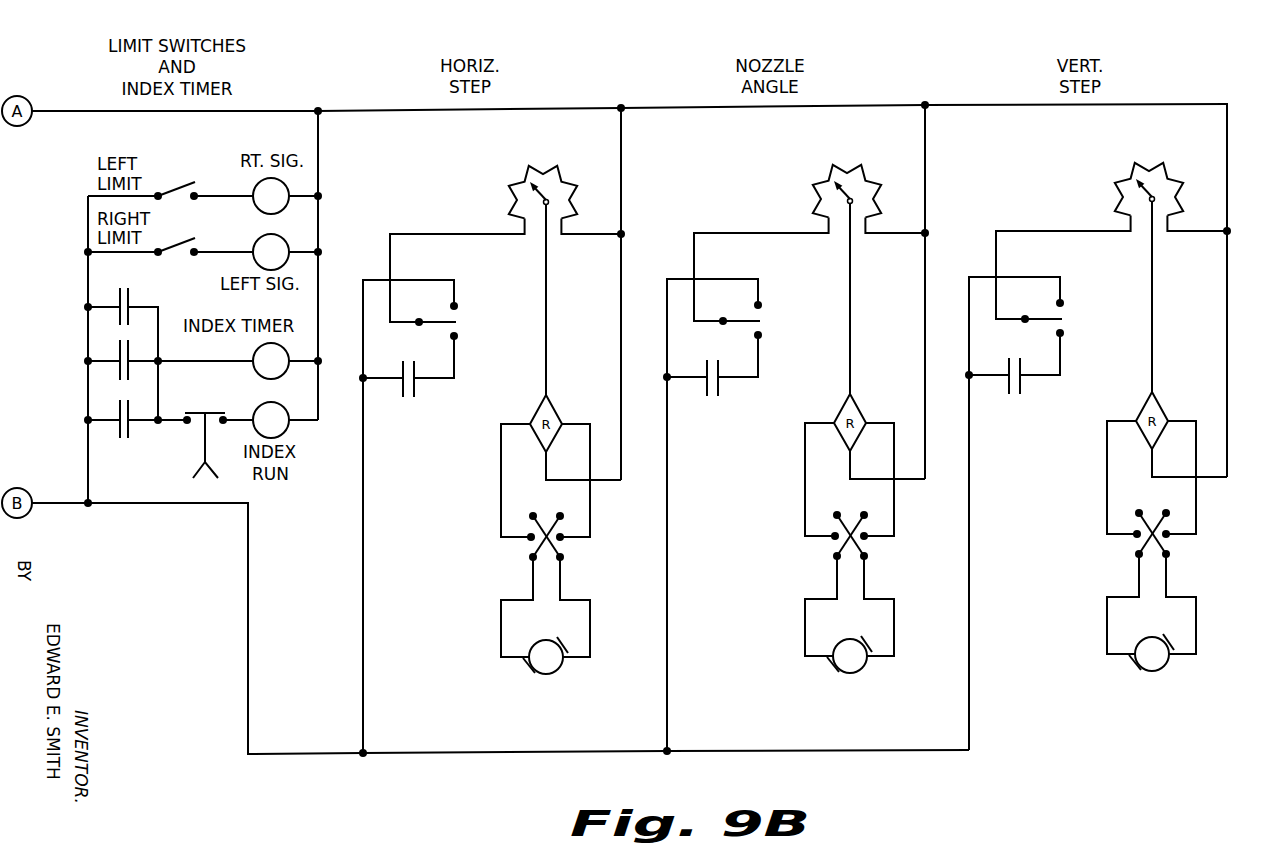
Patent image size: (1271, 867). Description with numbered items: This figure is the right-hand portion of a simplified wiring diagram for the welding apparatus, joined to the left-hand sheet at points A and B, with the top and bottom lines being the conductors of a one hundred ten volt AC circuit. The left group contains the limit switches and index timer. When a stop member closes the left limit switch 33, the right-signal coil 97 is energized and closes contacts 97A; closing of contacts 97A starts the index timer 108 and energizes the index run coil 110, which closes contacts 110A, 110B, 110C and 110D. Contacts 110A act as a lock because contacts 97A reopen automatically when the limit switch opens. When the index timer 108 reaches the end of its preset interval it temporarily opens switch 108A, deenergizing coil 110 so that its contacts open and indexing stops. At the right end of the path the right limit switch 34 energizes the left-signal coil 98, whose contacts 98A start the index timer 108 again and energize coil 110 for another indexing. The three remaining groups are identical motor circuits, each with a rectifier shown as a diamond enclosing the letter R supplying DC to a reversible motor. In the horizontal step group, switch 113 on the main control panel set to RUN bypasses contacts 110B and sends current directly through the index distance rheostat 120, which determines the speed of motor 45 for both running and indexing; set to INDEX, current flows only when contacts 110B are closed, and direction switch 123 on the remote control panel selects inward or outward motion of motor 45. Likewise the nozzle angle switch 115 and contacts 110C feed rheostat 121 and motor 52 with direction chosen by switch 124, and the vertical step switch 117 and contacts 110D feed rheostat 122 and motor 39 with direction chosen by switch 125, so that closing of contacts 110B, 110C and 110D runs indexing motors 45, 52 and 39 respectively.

The left limit switch 33 is at (176, 187).
The right limit switch 34 is at (177, 247).
The right signal coil 97 is at (256, 205).
The left signal coil 98 is at (255, 242).
The contacts of right signal coil 97A is at (124, 287).
The contacts of left signal coil 98A is at (118, 338).
The index timer 108 is at (257, 368).
The index run coil 110 is at (256, 409).
The index timer switch 108A is at (189, 425).
The index run lock contacts 110A is at (123, 440).
The horizontal step switch 113 is at (438, 328).
The index run contacts for horizontal step 110B is at (404, 399).
The index distance rheostat 120 is at (543, 180).
The horizontal step direction switch 123 is at (530, 548).
The horizontal step motor 45 is at (548, 674).
The nozzle angle switch 115 is at (745, 515).
The index run contacts for nozzle angle 110C is at (712, 377).
The nozzle angle rheostat 121 is at (809, 263).
The nozzle angle direction switch 124 is at (847, 538).
The nozzle angle motor 52 is at (849, 626).
The vertical step switch 117 is at (1047, 513).
The index run contacts for vertical step 110D is at (1015, 375).
The vertical step rheostat 122 is at (1111, 261).
The vertical step direction switch 125 is at (1149, 536).
The vertical step motor 39 is at (1151, 624).